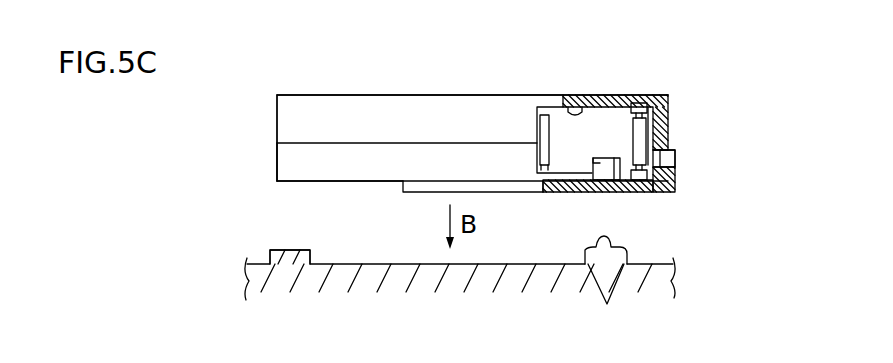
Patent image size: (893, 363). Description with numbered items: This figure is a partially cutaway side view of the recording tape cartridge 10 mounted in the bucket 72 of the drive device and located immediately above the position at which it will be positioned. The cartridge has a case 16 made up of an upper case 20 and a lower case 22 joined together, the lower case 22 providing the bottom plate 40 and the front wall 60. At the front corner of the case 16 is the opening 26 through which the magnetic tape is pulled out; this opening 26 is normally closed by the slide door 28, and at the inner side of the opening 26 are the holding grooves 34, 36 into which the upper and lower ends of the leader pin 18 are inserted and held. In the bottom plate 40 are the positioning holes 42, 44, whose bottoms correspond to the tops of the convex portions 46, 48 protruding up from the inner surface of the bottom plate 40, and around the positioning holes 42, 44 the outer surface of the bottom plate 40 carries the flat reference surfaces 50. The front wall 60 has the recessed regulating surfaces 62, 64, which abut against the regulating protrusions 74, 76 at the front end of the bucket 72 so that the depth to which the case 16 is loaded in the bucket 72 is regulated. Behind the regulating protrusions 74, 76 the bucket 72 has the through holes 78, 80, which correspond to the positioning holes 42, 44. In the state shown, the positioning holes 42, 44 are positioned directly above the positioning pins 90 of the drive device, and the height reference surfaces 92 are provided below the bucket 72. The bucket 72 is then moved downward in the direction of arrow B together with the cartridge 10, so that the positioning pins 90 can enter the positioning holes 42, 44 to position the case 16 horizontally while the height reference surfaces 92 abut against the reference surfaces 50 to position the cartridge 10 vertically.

The recording tape cartridge 10 is at (450, 82).
The case 16 is at (398, 18).
The leader pin 18 is at (636, 104).
The upper case 20 is at (330, 100).
The lower case 22 is at (343, 152).
The opening 26 is at (570, 103).
The slide door 28 is at (537, 123).
The holding groove 34 is at (643, 101).
The holding groove 36 is at (646, 193).
The bottom plate 40 is at (392, 182).
The positioning hole 42 is at (657, 222).
The positioning hole 44 is at (620, 195).
The convex portion 46 is at (512, 140).
The convex portion 48 is at (537, 132).
The reference surface 50 is at (285, 184).
The front wall 60 is at (672, 150).
The regulating surface 62 is at (712, 153).
The regulating surface 64 is at (675, 156).
The bucket 72 is at (429, 192).
The regulating protrusion 74 is at (714, 186).
The regulating protrusion 76 is at (677, 182).
The through hole 78 is at (540, 172).
The through hole 80 is at (566, 106).
The positioning pin 90 is at (585, 252).
The height reference surface 92 is at (308, 262).